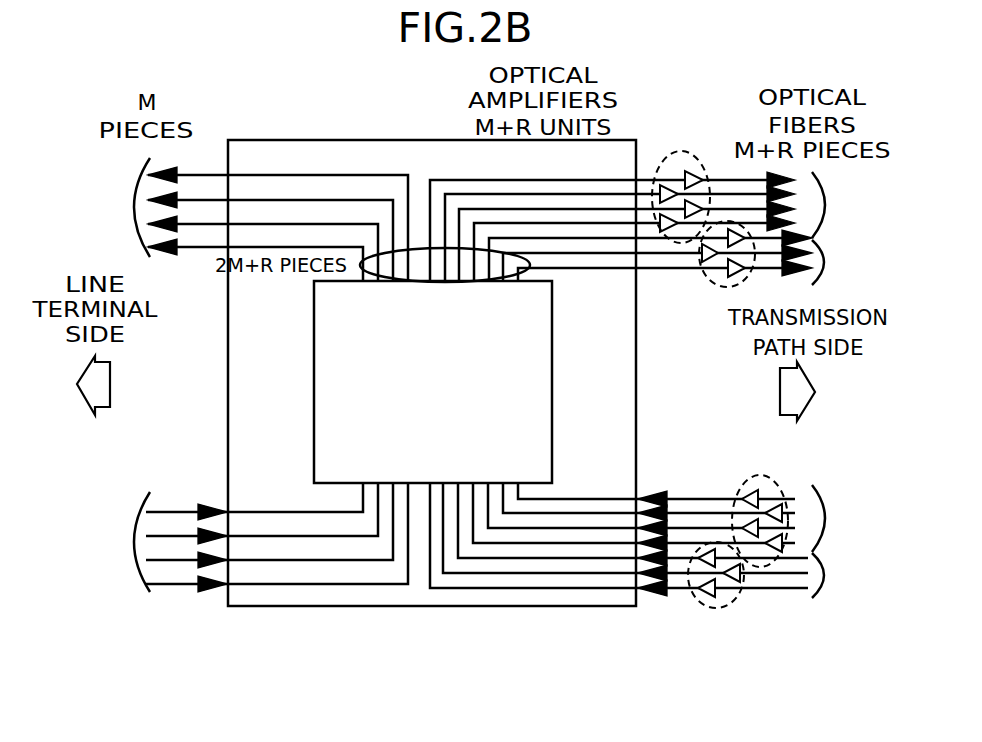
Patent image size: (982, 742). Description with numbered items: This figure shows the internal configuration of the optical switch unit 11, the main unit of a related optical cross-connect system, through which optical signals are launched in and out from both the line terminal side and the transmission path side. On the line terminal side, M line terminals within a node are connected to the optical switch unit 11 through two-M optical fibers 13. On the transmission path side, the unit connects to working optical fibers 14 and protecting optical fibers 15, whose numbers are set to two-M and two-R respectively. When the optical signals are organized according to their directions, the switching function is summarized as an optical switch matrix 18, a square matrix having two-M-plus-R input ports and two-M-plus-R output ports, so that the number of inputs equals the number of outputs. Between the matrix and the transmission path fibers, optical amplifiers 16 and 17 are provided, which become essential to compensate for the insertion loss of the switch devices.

The optical switch unit 11 is at (282, 139).
The optical fibers 13 is at (120, 205).
The working optical fibers 14 is at (826, 207).
The protecting optical fibers 15 is at (826, 264).
The optical amplifiers 16 is at (683, 151).
The optical amplifiers 17 is at (712, 288).
The optical switch matrix 18 is at (314, 321).